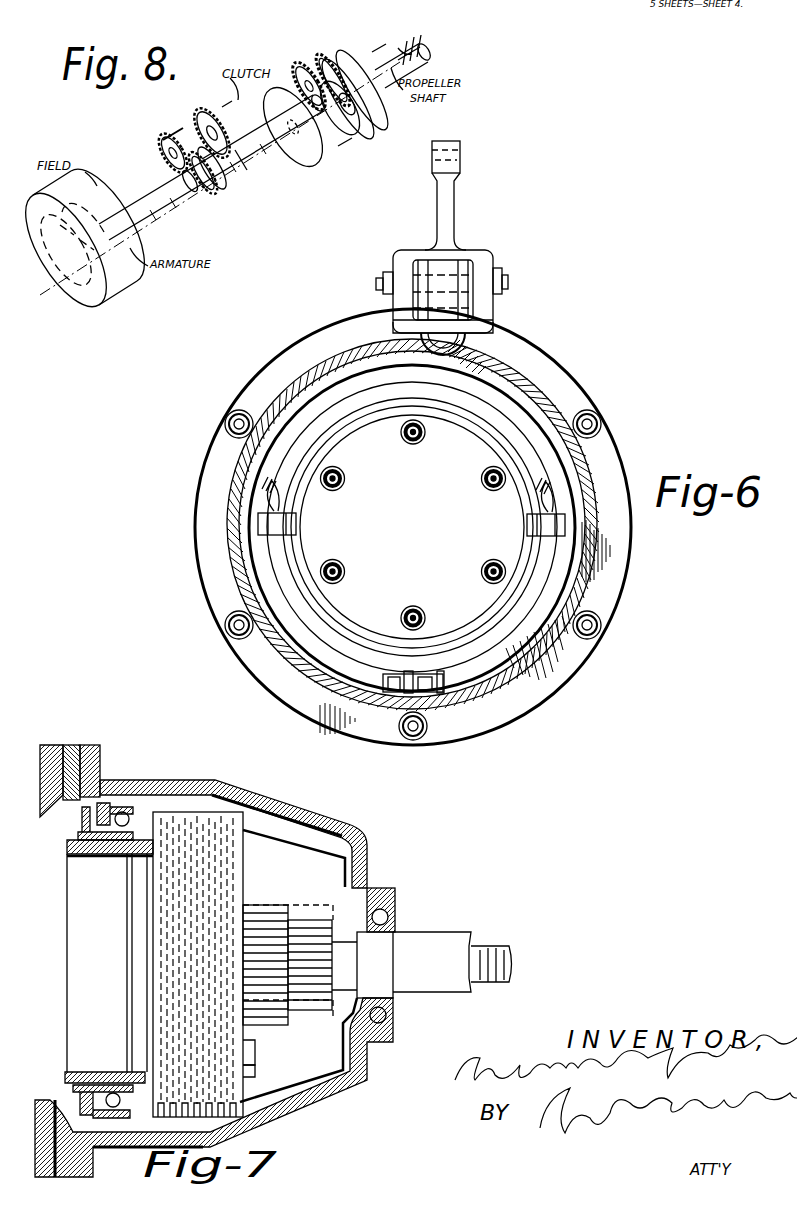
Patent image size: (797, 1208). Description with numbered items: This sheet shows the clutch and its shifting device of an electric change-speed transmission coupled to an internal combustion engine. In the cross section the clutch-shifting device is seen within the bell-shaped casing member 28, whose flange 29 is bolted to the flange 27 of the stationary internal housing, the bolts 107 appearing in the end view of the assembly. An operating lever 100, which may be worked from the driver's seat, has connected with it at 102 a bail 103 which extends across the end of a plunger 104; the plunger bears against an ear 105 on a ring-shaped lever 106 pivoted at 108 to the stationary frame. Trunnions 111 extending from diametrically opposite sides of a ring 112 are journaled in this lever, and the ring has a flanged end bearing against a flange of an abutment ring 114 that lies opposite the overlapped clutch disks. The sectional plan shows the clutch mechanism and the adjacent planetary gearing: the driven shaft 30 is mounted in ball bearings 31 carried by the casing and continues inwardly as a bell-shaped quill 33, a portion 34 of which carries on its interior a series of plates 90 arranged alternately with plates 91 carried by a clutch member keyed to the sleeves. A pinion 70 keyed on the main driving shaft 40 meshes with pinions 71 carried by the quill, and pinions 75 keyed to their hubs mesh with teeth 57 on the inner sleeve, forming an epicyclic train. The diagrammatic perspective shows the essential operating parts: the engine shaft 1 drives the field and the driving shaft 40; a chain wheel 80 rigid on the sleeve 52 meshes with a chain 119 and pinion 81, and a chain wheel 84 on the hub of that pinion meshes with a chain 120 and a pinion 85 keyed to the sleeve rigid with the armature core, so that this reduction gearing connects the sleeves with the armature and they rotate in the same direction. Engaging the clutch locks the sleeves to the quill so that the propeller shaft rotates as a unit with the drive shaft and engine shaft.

In FIG. 8, the engine shaft 1 is at (50, 305).
In FIG. 7, the flange of internal housing 27 is at (78, 737).
In FIG. 6, the bell-shaped casing member 28 is at (468, 702).
In FIG. 7, the bell-shaped casing member 28 is at (303, 1108).
In FIG. 6, the flange of casing member 29 is at (413, 527).
In FIG. 7, the flange of casing member 29 is at (102, 766).
In FIG. 7, the driven shaft 30 is at (434, 965).
In FIG. 7, the ball bearings 31 is at (396, 918).
In FIG. 7, the bell-shaped quill 33 is at (298, 966).
In FIG. 8, the bell-shaped quill 33 is at (370, 42).
In FIG. 7, the portion of quill 34 is at (198, 964).
In FIG. 8, the main driving shaft 40 is at (170, 222).
In FIG. 8, the sleeve 52 is at (272, 165).
In FIG. 8, the teeth on sleeve 57 is at (330, 138).
In FIG. 8, the pinion 70 is at (344, 128).
In FIG. 7, the pinions 71 is at (320, 947).
In FIG. 8, the pinions 71 is at (322, 52).
In FIG. 7, the pinions 75 is at (286, 930).
In FIG. 8, the pinions 75 is at (302, 64).
In FIG. 8, the chain wheel 80 is at (216, 190).
In FIG. 8, the pinion 81 is at (204, 123).
In FIG. 8, the chain wheel 84 is at (166, 154).
In FIG. 8, the pinion 85 is at (194, 191).
In FIG. 7, the clutch plates 90 is at (210, 1057).
In FIG. 7, the clutch plates 91 is at (213, 1073).
In FIG. 6, the operating lever 100 is at (454, 212).
In FIG. 6, the connection point of bail 102 is at (505, 285).
In FIG. 6, the bail 103 is at (485, 304).
In FIG. 6, the plunger 104 is at (467, 338).
In FIG. 6, the ear 105 is at (393, 324).
In FIG. 6, the ring-shaped lever 106 is at (545, 436).
In FIG. 7, the ring-shaped lever 106 is at (133, 812).
In FIG. 6, the bolt 107 is at (481, 486).
In FIG. 6, the pivot 108 is at (443, 679).
In FIG. 6, the trunnions 111 is at (411, 505).
In FIG. 6, the ring 112 is at (437, 434).
In FIG. 7, the ring 112 is at (96, 814).
In FIG. 7, the abutment ring 114 is at (88, 850).
In FIG. 8, the chain 119 is at (251, 180).
In FIG. 8, the chain 120 is at (166, 136).